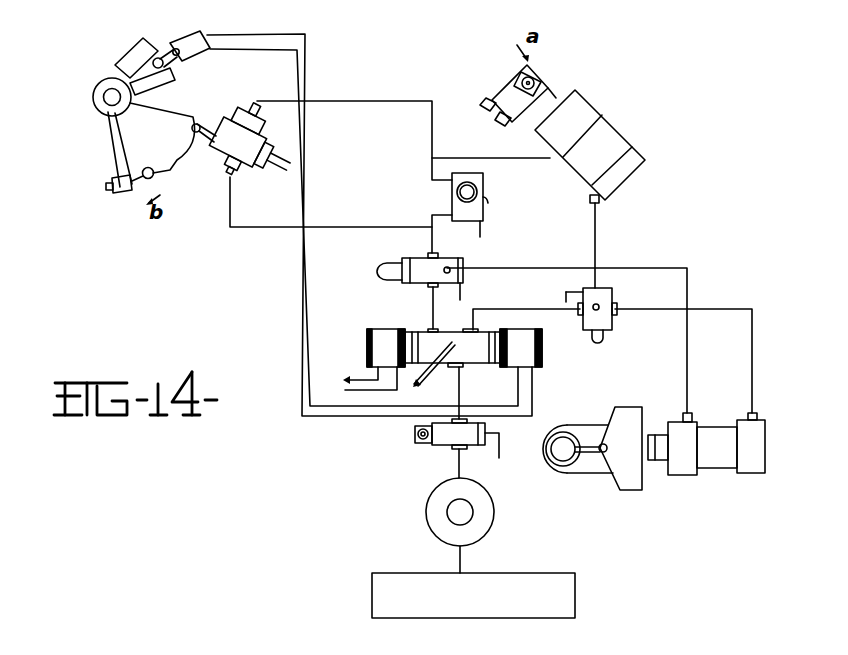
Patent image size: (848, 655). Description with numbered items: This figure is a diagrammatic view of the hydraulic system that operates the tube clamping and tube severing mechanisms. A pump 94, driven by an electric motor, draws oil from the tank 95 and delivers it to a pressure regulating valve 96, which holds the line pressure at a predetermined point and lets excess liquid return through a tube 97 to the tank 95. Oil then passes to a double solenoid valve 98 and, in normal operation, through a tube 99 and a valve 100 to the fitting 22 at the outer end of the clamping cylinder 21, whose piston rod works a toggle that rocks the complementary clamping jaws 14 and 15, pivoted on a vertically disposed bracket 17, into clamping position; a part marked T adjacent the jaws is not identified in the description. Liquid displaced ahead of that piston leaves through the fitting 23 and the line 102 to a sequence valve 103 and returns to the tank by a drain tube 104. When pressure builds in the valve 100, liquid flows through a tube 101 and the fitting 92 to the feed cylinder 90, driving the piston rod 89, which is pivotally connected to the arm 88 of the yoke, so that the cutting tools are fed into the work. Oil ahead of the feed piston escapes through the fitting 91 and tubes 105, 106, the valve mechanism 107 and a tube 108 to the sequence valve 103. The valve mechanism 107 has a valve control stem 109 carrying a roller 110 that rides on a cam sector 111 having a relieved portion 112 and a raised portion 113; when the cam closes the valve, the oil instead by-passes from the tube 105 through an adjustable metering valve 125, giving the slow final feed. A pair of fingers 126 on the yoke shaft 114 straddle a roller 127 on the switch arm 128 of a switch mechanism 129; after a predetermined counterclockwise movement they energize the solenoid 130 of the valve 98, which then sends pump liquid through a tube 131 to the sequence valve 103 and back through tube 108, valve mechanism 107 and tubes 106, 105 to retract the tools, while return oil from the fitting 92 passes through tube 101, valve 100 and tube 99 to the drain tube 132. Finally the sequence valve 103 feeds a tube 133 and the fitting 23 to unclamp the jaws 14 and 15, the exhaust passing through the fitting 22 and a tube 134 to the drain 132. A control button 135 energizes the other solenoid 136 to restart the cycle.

The clamping jaw 14 is at (603, 406).
The clamping jaw 15 is at (562, 479).
The shaft T is at (573, 461).
The bracket 17 is at (631, 488).
The cylinder 21 is at (715, 470).
The fitting 22 is at (751, 413).
The fitting 23 is at (683, 413).
The arm 88 is at (492, 95).
The piston rod 89 is at (562, 92).
The feed cylinder 90 is at (597, 127).
The fitting 91 is at (549, 152).
The fitting 92 is at (599, 203).
The pump 94 is at (490, 524).
The tank 95 is at (575, 588).
The pressure regulating valve 96 is at (445, 448).
The tube 97 is at (499, 458).
The double solenoid valve 98 is at (482, 358).
The tube 99 is at (517, 309).
The valve 100 is at (613, 295).
The tube 101 is at (597, 247).
The line 102 is at (687, 350).
The sequence valve 103 is at (410, 284).
The tube 104 is at (458, 301).
The tube 105 is at (478, 158).
The tube 106 is at (401, 101).
The valve mechanism 107 is at (244, 161).
The tube 108 is at (257, 228).
The valve control stem 109 is at (213, 130).
The roller 110 is at (204, 124).
The cam sector 111 is at (117, 127).
The relieved portion 112 is at (192, 128).
The raised portion 113 is at (175, 166).
The yoke shaft 114 is at (97, 103).
The metering valve 125 is at (466, 222).
The fingers 126 is at (130, 64).
The roller 127 is at (152, 58).
The switch arm 128 is at (167, 50).
The switch mechanism 129 is at (207, 48).
The solenoid 130 is at (538, 331).
The tube 131 is at (433, 298).
The tube 132 is at (433, 375).
The tube 133 is at (513, 268).
The tube 134 is at (760, 303).
The control button 135 is at (333, 383).
The solenoid 136 is at (367, 338).